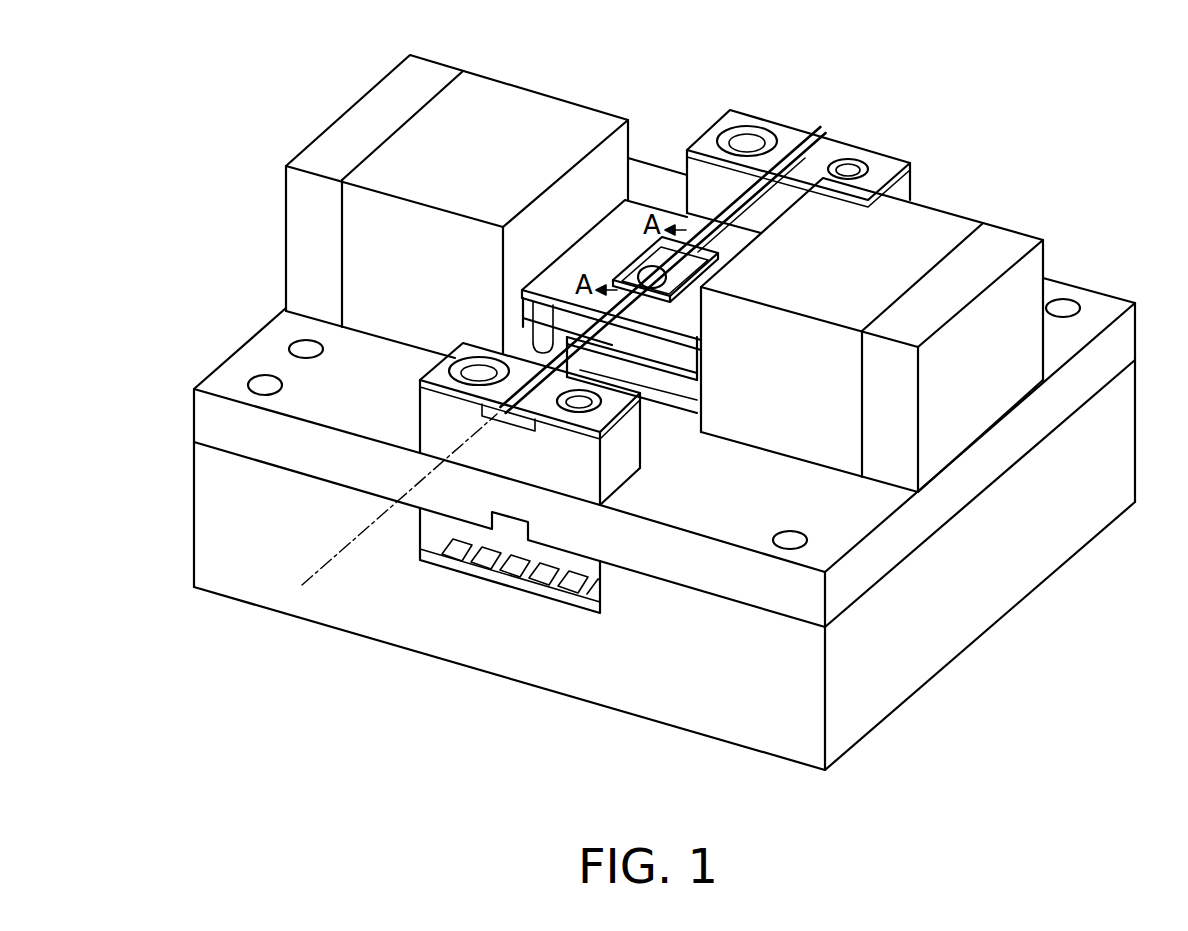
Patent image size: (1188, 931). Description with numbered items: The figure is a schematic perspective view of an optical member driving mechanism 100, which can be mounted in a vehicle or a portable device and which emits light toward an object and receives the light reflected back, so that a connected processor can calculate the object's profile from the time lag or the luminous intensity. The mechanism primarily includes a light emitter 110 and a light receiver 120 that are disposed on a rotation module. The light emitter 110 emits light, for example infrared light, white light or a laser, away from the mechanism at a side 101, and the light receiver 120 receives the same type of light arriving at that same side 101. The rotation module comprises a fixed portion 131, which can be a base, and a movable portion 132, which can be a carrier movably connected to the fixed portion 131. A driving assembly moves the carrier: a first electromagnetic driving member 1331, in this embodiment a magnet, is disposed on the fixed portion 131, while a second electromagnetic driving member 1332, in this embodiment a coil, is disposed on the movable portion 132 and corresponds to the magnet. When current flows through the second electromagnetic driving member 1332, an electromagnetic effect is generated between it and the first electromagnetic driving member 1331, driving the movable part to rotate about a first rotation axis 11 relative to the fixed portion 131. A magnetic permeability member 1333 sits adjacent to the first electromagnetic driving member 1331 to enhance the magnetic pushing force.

The optical member driving mechanism 100 is at (73, 14).
The side 101 is at (997, 190).
The first rotation axis 11 is at (823, 133).
The light emitter 110 is at (653, 248).
The light receiver 120 is at (623, 270).
The fixed portion 131 is at (1042, 552).
The movable portion 132 is at (607, 247).
The first electromagnetic driving member 1331 is at (367, 269).
The second electromagnetic driving member 1332 is at (665, 373).
The magnetic permeability member 1333 is at (305, 221).